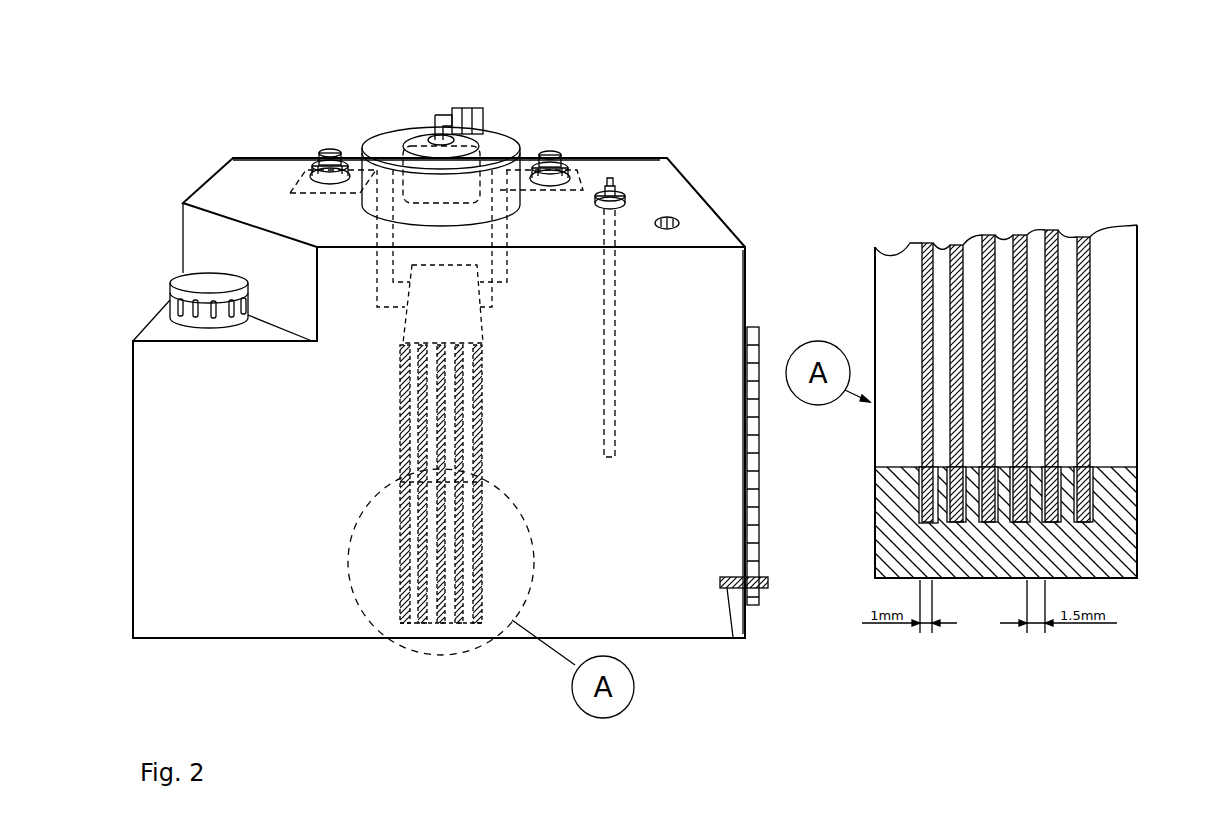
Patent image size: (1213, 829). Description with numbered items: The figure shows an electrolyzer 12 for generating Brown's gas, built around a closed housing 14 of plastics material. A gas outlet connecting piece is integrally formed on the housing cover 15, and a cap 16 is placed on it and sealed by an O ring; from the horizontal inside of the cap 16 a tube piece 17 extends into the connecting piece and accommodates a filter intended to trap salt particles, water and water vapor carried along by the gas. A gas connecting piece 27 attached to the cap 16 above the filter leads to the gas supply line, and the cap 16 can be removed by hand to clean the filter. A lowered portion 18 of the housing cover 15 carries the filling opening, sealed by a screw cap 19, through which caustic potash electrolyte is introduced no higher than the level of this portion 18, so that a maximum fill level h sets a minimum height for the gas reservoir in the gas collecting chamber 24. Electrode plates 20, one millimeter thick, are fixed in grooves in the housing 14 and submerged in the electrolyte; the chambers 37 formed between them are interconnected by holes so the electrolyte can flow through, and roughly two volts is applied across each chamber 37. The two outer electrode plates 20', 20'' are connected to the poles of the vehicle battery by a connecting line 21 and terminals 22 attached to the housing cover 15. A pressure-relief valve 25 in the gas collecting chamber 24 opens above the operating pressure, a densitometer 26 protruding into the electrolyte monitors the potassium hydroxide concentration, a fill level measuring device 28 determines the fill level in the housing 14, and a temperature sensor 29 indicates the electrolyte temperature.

The electrolyzer 12 is at (207, 640).
The housing 14 is at (180, 472).
The housing cover 15 is at (285, 218).
The cap 16 is at (493, 145).
The tube piece 17 is at (438, 188).
The lowered portion of the housing cover 18 is at (158, 315).
The screw cap 19 is at (223, 307).
The electrode plates 20 is at (719, 400).
The outer electrode plate 20' is at (645, 407).
The outer electrode plate 20'' is at (818, 401).
The connecting line 21 is at (383, 267).
The terminals 22 is at (327, 155).
The gas collecting chamber 24 is at (687, 315).
The pressure-relief valve 25 is at (680, 220).
The densitometer 26 is at (615, 180).
The gas connecting piece 27 is at (447, 117).
The fill level measuring device 28 is at (752, 532).
The temperature sensor 29 is at (742, 592).
The chambers 37 is at (468, 615).